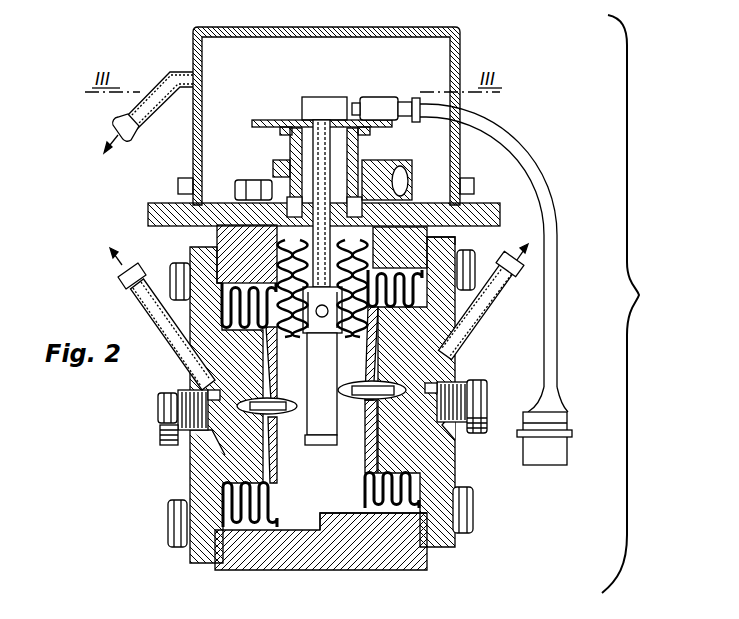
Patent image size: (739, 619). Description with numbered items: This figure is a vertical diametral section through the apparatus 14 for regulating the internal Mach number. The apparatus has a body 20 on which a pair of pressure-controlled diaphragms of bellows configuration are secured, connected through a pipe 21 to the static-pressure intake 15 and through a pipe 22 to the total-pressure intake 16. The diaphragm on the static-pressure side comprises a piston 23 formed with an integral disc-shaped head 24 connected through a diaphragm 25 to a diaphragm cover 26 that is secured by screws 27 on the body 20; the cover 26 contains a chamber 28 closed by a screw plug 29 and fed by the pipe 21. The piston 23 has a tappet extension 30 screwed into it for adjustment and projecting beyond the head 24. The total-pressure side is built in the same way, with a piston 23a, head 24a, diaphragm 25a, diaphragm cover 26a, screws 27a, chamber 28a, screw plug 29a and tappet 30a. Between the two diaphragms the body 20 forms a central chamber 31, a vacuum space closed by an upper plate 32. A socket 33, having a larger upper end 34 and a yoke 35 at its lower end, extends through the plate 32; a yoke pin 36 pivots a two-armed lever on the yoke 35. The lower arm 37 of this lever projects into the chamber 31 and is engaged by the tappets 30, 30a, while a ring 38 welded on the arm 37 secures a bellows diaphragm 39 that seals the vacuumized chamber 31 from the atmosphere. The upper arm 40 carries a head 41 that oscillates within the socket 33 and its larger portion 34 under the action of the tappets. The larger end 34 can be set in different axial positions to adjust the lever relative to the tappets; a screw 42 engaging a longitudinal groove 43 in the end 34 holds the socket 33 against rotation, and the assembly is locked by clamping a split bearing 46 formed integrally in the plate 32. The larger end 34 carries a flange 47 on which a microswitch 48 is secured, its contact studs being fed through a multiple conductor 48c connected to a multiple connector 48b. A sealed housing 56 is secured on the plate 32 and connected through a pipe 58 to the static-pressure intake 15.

The apparatus for regulating the internal Mach number 14 is at (629, 304).
The static-pressure intake 15 is at (101, 200).
The total-pressure intake 16 is at (529, 241).
The body 20 is at (304, 560).
The pipe 21 is at (150, 291).
The pipe 22 is at (498, 285).
The piston 23 is at (226, 405).
The piston 23a is at (480, 409).
The disc-shaped head 24 is at (276, 399).
The disc-shaped head 24a is at (369, 452).
The diaphragm 25 is at (240, 556).
The diaphragm 25a is at (418, 493).
The diaphragm cover 26 is at (192, 445).
The diaphragm cover 26a is at (453, 436).
The screws 27 is at (178, 522).
The screws 27a is at (475, 511).
The chamber 28 is at (218, 393).
The chamber 28a is at (485, 366).
The screw plug 29 is at (158, 391).
The screw plug 29a is at (486, 385).
The tappet extension 30 is at (290, 418).
The tappet extension 30a is at (356, 400).
The central chamber 31 is at (362, 520).
The upper plate 32 is at (490, 210).
The socket 33 is at (458, 238).
The larger upper end 34 is at (356, 160).
The yoke 35 is at (322, 322).
The yoke pin 36 is at (322, 320).
The lower arm 37 is at (327, 447).
The ring 38 is at (334, 335).
The diaphragm 39 is at (360, 318).
The upper arm 40 is at (327, 156).
The head 41 is at (324, 108).
The screw 42 is at (272, 167).
The longitudinal groove 43 is at (282, 139).
The split bearing 46 is at (388, 190).
The flange 47 is at (278, 119).
The microswitch 48 is at (376, 106).
The multiple connector 48b is at (620, 452).
The multiple conductor 48c is at (609, 260).
The sealed housing 56 is at (462, 50).
The pipe 58 is at (160, 78).